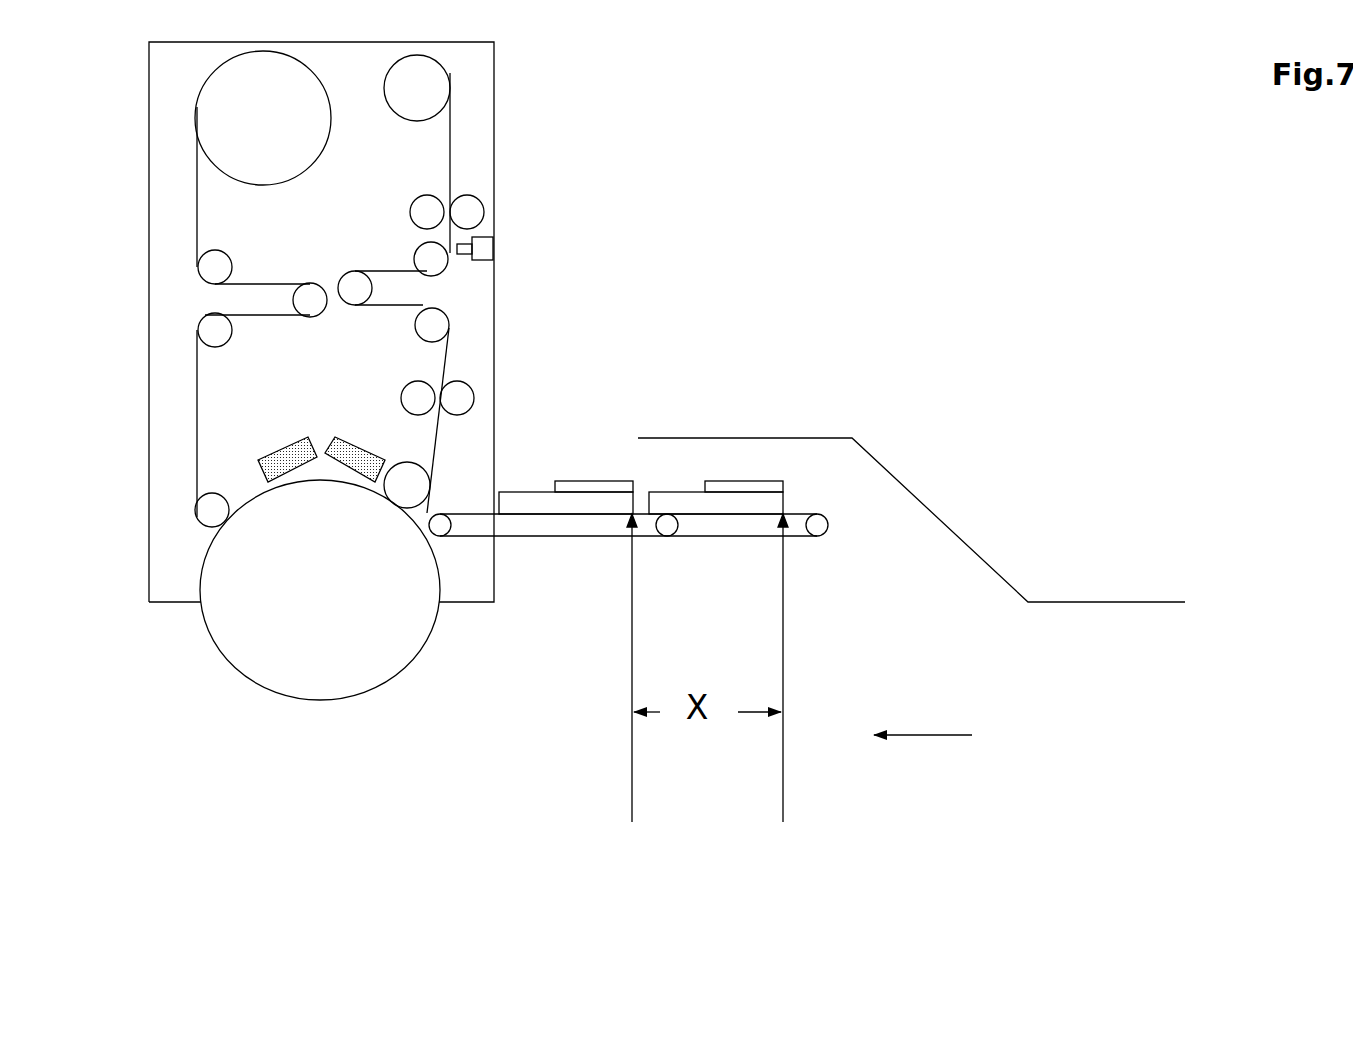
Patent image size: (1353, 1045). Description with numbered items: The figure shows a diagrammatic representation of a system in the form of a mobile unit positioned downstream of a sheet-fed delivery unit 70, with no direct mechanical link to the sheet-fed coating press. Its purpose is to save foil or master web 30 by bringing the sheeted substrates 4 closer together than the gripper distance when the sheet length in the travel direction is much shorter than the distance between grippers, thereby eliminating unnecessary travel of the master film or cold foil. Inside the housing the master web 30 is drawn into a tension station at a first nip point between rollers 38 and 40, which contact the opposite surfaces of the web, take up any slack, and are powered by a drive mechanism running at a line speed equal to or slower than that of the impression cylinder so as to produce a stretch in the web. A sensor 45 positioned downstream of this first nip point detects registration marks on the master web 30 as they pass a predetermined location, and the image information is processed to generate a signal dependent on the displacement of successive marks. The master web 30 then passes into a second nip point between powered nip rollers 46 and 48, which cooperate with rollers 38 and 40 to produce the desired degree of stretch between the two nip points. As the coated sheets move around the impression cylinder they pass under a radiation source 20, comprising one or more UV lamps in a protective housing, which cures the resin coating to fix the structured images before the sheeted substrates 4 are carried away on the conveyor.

The sheeted substrates 4 is at (540, 488).
The radiation source 20 is at (382, 458).
The master web 30 is at (449, 150).
The roller 38 is at (422, 206).
The roller 40 is at (485, 207).
The sensor 45 is at (495, 250).
The nip roller 46 is at (420, 379).
The nip roller 48 is at (475, 387).
The sheet-fed delivery unit 70 is at (932, 468).